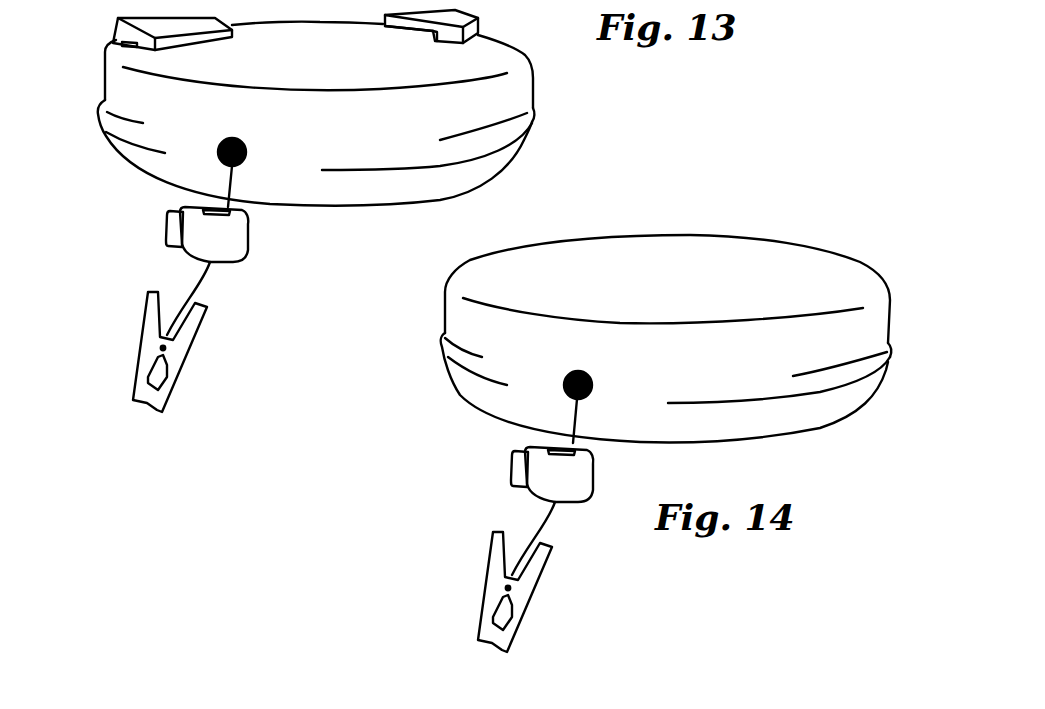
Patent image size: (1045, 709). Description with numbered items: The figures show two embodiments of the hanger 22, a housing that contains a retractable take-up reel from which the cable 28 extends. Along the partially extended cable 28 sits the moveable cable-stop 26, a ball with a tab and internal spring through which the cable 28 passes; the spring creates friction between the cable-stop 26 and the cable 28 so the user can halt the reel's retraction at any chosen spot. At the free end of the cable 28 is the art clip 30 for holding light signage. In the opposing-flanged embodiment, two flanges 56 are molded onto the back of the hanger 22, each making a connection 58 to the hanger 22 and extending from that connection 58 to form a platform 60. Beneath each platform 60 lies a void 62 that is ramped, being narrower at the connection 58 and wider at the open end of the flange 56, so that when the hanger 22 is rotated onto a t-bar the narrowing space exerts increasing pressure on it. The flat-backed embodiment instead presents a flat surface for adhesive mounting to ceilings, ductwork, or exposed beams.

In FIG. 13, the hanger 22 is at (537, 82).
In FIG. 14, the hanger 22 is at (816, 430).
In FIG. 13, the cable-stop 26 is at (250, 228).
In FIG. 14, the cable-stop 26 is at (512, 468).
In FIG. 13, the cable 28 is at (195, 290).
In FIG. 14, the cable 28 is at (544, 515).
In FIG. 13, the art clip 30 is at (195, 350).
In FIG. 14, the art clip 30 is at (482, 581).
In FIG. 13, the flange 56 is at (220, 13).
In FIG. 13, the connection 58 is at (107, 47).
In FIG. 13, the platform 60 is at (270, 66).
In FIG. 13, the void 62 is at (396, 34).